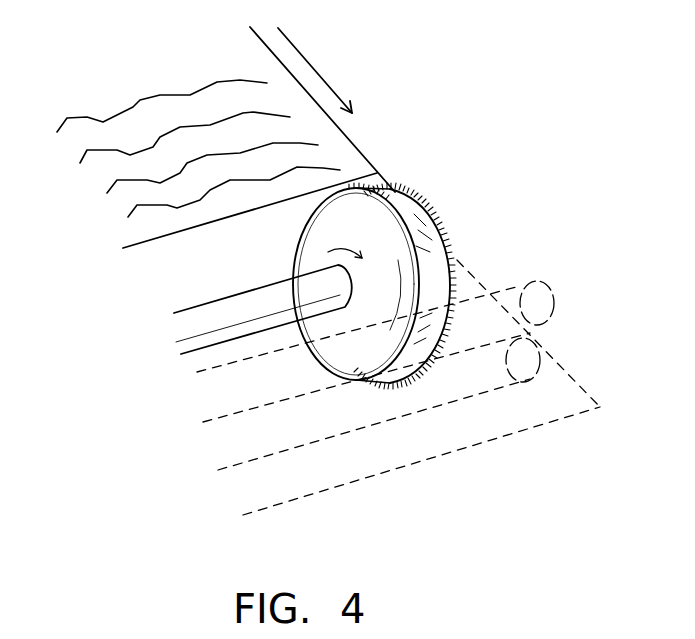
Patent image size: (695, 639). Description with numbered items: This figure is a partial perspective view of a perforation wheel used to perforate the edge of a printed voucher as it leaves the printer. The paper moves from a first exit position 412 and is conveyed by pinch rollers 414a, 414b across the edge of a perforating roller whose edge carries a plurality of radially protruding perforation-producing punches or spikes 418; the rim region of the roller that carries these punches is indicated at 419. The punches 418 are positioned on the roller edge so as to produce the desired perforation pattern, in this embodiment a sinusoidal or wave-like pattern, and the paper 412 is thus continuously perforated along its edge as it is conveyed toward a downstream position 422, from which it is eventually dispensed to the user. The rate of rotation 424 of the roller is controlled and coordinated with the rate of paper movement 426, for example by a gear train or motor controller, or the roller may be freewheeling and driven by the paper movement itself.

The first exit position 412 is at (343, 143).
The pinch roller 414a is at (555, 298).
The pinch roller 414b is at (543, 357).
The perforation-producing punches or spikes 418 is at (382, 176).
The roller rim 419 is at (430, 213).
The downstream position 422 is at (510, 438).
The rate of rotation 424 is at (250, 211).
The rate of paper movement 426 is at (317, 71).